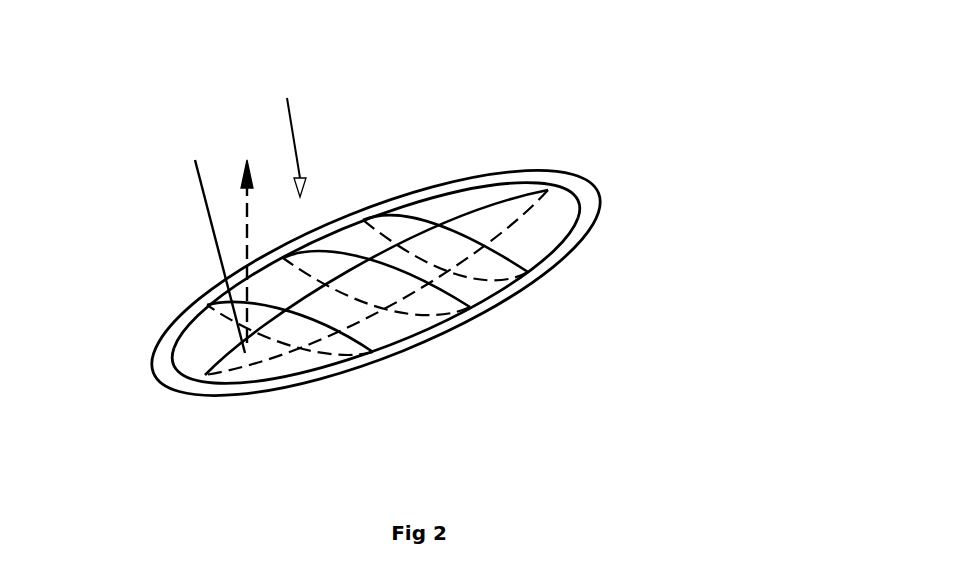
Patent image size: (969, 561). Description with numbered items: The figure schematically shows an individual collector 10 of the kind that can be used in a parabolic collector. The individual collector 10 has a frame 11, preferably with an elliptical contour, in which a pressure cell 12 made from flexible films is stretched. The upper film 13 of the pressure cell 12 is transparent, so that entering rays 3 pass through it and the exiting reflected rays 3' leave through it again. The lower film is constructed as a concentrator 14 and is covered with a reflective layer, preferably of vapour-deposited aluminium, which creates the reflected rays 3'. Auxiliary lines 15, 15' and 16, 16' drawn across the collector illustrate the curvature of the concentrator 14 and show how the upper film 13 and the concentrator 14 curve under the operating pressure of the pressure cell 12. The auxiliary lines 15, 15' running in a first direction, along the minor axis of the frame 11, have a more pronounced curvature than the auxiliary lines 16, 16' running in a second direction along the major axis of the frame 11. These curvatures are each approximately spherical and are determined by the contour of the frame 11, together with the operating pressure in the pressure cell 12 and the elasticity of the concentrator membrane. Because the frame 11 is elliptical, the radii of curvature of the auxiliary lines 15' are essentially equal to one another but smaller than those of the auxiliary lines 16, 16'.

The entering rays 3 is at (192, 256).
The reflected rays 3' is at (195, 251).
The individual collector 10 is at (624, 147).
The frame 11 is at (537, 278).
The pressure cell 12 is at (284, 138).
The upper film 13 is at (433, 247).
The concentrator 14 is at (460, 327).
The auxiliary lines 15 is at (468, 221).
The auxiliary lines 15' is at (298, 267).
The auxiliary lines 16 is at (376, 212).
The auxiliary lines 16' is at (419, 282).